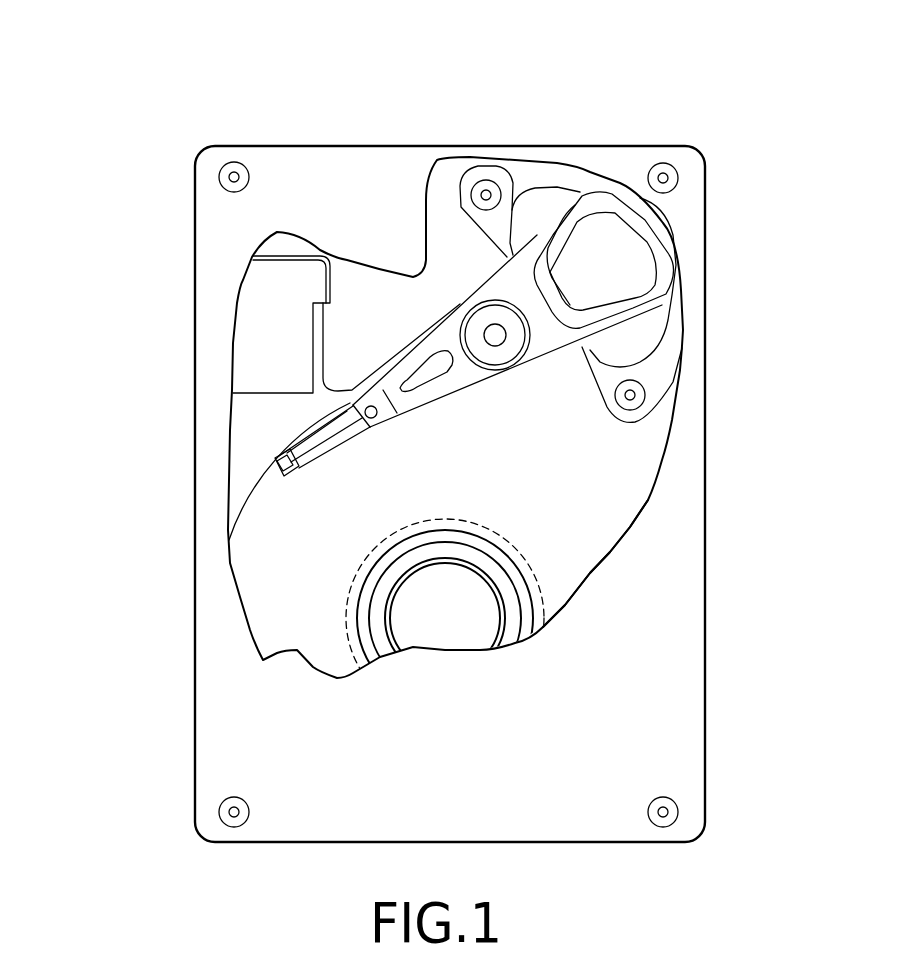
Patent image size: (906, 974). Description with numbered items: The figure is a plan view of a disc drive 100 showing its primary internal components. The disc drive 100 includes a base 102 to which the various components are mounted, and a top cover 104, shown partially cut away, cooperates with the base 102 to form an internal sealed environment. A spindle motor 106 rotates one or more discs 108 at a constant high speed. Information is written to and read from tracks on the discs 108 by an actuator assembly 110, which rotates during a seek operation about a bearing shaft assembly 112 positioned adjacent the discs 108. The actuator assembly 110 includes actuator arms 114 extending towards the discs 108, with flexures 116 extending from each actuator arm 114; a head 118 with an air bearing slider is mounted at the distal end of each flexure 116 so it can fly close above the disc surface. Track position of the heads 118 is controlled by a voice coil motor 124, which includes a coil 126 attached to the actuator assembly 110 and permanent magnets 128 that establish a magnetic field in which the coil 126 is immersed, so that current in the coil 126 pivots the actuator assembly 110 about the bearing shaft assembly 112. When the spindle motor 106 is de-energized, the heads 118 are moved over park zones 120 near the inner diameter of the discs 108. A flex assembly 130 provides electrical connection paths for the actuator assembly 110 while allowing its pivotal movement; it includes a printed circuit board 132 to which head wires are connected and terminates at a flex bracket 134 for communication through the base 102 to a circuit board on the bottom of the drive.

The disc drive 100 is at (230, 104).
The base 102 is at (258, 443).
The top cover 104 is at (240, 707).
The spindle motor 106 is at (446, 625).
The disc 108 is at (592, 547).
The actuator assembly 110 is at (470, 350).
The bearing shaft assembly 112 is at (497, 337).
The actuator arm 114 is at (447, 395).
The flexure 116 is at (323, 443).
The head 118 is at (272, 472).
The park zone 120 is at (346, 612).
The voice coil motor 124 is at (523, 148).
The coil 126 is at (660, 262).
The permanent magnet 128 is at (524, 218).
The flex assembly 130 is at (418, 338).
The printed circuit board 132 is at (458, 296).
The flex bracket 134 is at (272, 337).